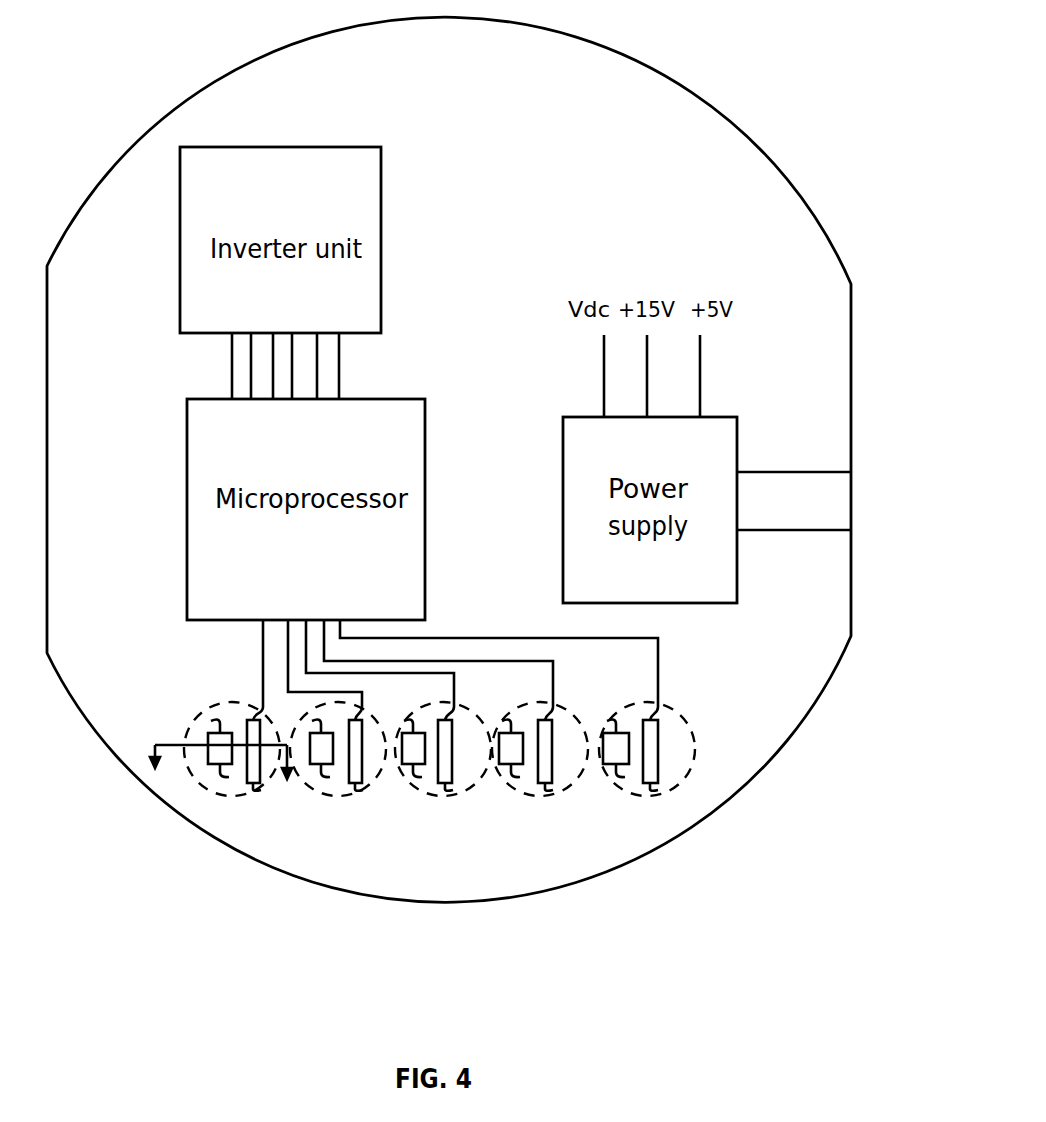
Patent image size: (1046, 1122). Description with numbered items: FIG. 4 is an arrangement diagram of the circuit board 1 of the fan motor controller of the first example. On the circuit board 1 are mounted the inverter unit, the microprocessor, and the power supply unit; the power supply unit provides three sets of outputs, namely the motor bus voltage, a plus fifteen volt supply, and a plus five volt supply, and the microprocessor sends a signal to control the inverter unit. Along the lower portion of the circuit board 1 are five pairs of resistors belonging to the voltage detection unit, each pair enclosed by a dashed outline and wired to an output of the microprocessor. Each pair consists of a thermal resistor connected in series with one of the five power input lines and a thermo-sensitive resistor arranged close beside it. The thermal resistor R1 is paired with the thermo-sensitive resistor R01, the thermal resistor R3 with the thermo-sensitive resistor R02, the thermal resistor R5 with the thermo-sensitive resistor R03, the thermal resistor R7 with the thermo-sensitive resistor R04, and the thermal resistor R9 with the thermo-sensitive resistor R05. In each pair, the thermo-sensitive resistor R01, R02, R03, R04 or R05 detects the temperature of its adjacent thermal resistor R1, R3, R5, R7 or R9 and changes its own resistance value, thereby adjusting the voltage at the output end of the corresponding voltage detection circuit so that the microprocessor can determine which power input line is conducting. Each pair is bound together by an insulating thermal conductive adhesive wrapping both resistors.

The circuit board 1 is at (625, 173).
The thermal resistor R1 is at (220, 757).
The thermo-sensitive resistor R01 is at (253, 762).
The thermal resistor R3 is at (320, 752).
The thermo-sensitive resistor R02 is at (355, 767).
The thermal resistor R5 is at (413, 748).
The thermo-sensitive resistor R03 is at (447, 750).
The thermal resistor R7 is at (513, 755).
The thermo-sensitive resistor R04 is at (545, 760).
The thermal resistor R9 is at (615, 755).
The thermo-sensitive resistor R05 is at (645, 748).